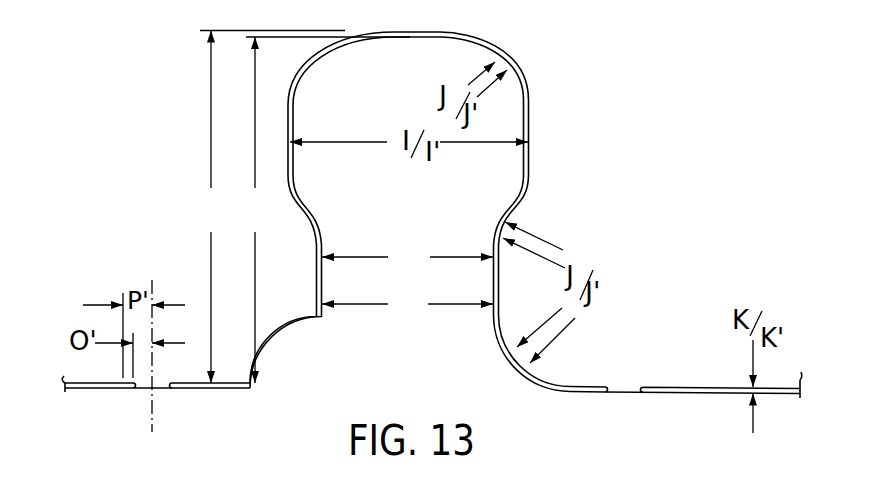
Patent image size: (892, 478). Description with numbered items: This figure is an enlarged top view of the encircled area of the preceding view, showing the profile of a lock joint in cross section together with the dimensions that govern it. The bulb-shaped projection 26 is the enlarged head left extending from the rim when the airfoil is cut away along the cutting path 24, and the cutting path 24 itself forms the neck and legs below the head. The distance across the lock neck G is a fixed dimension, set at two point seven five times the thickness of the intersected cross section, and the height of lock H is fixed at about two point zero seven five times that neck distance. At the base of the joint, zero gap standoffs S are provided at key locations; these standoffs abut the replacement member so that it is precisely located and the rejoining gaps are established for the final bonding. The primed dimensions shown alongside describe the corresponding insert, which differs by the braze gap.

The cutting path 24 is at (499, 287).
The bulb-shaped projection 26 is at (507, 110).
The zero gap standoff S is at (290, 142).
The height of lock H is at (305, 207).
The distance across lock neck G is at (407, 280).